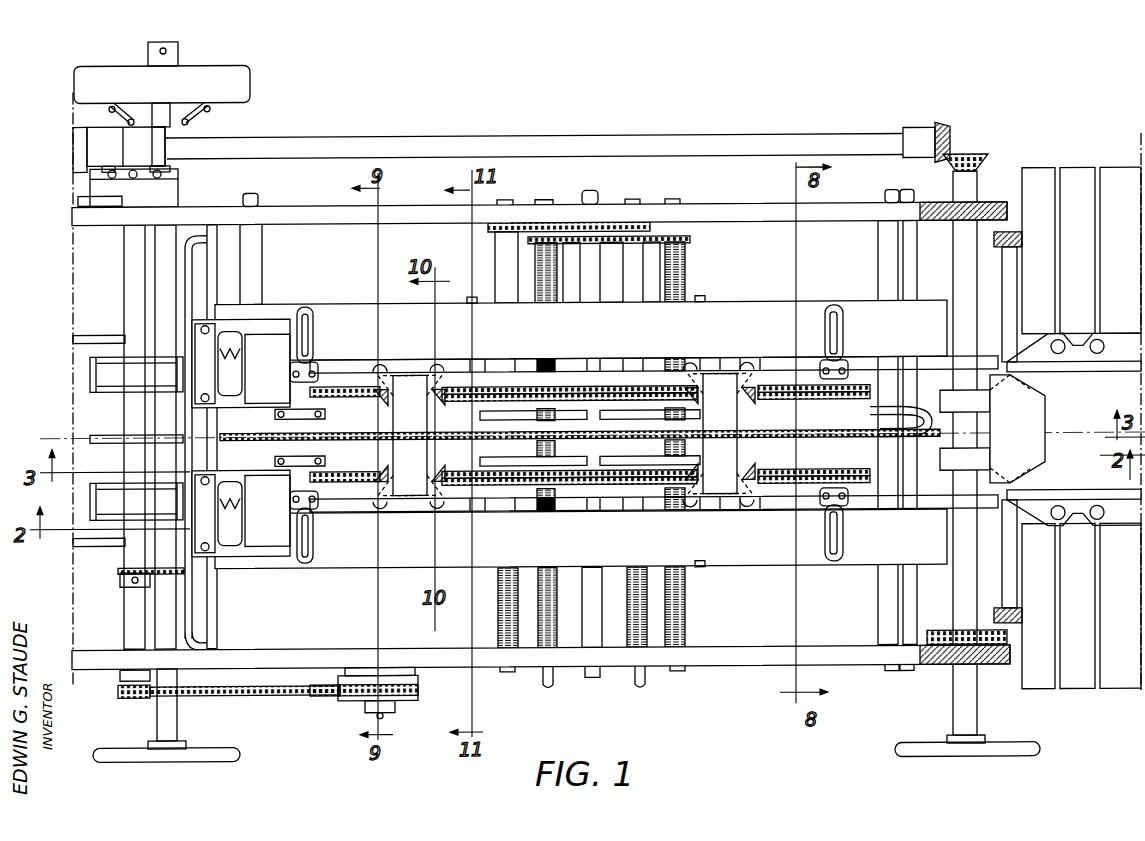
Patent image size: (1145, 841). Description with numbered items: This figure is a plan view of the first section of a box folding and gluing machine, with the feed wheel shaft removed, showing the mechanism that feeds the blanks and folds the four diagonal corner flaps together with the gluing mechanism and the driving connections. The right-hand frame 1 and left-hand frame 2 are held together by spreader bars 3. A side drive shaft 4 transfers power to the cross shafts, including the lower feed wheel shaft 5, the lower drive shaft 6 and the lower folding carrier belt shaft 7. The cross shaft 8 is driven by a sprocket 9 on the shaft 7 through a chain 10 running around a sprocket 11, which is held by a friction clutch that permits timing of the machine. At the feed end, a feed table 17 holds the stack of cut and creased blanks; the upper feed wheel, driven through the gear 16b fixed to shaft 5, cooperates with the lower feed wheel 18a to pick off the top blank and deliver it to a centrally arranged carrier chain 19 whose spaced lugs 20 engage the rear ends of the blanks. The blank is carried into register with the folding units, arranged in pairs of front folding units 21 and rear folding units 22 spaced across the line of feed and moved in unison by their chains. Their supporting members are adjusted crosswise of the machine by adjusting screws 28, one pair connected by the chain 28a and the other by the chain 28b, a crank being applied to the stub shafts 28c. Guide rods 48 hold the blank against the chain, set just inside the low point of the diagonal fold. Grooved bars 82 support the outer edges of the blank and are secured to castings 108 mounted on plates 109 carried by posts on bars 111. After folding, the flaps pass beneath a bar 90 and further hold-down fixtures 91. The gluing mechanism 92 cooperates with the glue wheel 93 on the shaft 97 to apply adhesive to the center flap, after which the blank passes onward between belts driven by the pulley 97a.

The right-hand frame 1 is at (771, 214).
The left-hand frame 2 is at (762, 661).
The spreader bars 3 is at (254, 239).
The side drive shaft 4 is at (873, 140).
The lower feed wheel shaft 5 is at (967, 692).
The lower drive shaft 6 is at (170, 705).
The lower folding carrier belt shaft 7 is at (130, 701).
The cross shaft 8 is at (376, 598).
The sprocket 9 is at (145, 700).
The chain 10 is at (325, 696).
The sprocket 11 is at (420, 692).
The gear 16b is at (956, 641).
The feed table 17 is at (1110, 677).
The lower feed wheel 18a is at (968, 466).
The carrier chain 19 is at (366, 445).
The lugs 20 is at (443, 440).
The front folding units 21 is at (384, 402).
The rear folding units 22 is at (441, 392).
The adjusting screws 28 is at (508, 273).
The chain 28a is at (526, 230).
The chain 28b is at (657, 240).
The stub shafts 28c is at (551, 691).
The guide rods 48 is at (747, 418).
The bars 82 is at (955, 378).
The bar 90 is at (443, 466).
The hold-down fixtures 91 is at (498, 459).
The gluing mechanism 92 is at (241, 438).
The glue wheel 93 is at (148, 381).
The shaft 97 is at (134, 257).
The pulley 97a is at (110, 439).
The castings 108 is at (315, 350).
The plates 109 is at (581, 434).
The bars 111 is at (704, 307).